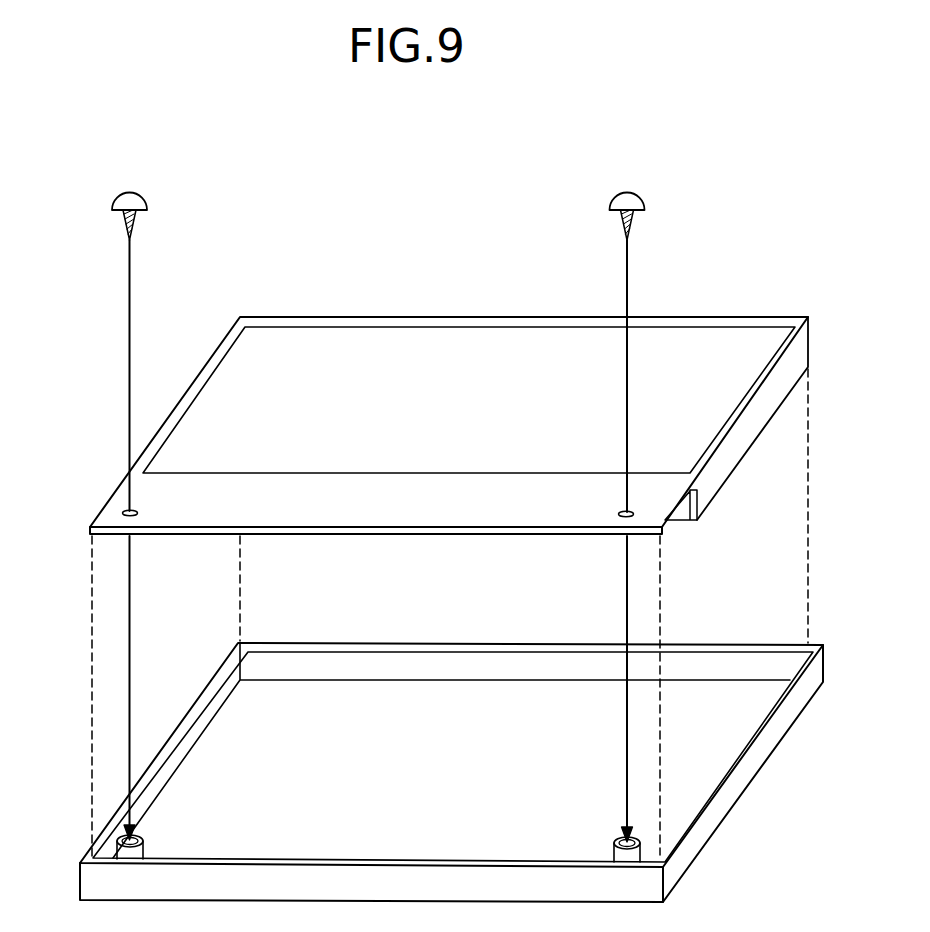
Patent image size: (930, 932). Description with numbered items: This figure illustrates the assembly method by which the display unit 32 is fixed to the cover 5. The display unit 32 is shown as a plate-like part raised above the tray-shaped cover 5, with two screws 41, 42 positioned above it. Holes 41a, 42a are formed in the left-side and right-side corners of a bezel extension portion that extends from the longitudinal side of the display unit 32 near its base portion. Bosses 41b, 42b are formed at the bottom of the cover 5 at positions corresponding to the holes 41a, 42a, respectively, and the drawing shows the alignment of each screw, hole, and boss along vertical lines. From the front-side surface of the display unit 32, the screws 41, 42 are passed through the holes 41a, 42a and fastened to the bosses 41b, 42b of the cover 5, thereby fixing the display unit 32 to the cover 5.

The cover 5 is at (718, 817).
The display unit 32 is at (462, 309).
The screw 41 is at (139, 193).
The screw 42 is at (637, 194).
The hole 41a is at (122, 513).
The hole 42a is at (634, 516).
The boss 41b is at (146, 843).
The boss 42b is at (613, 845).